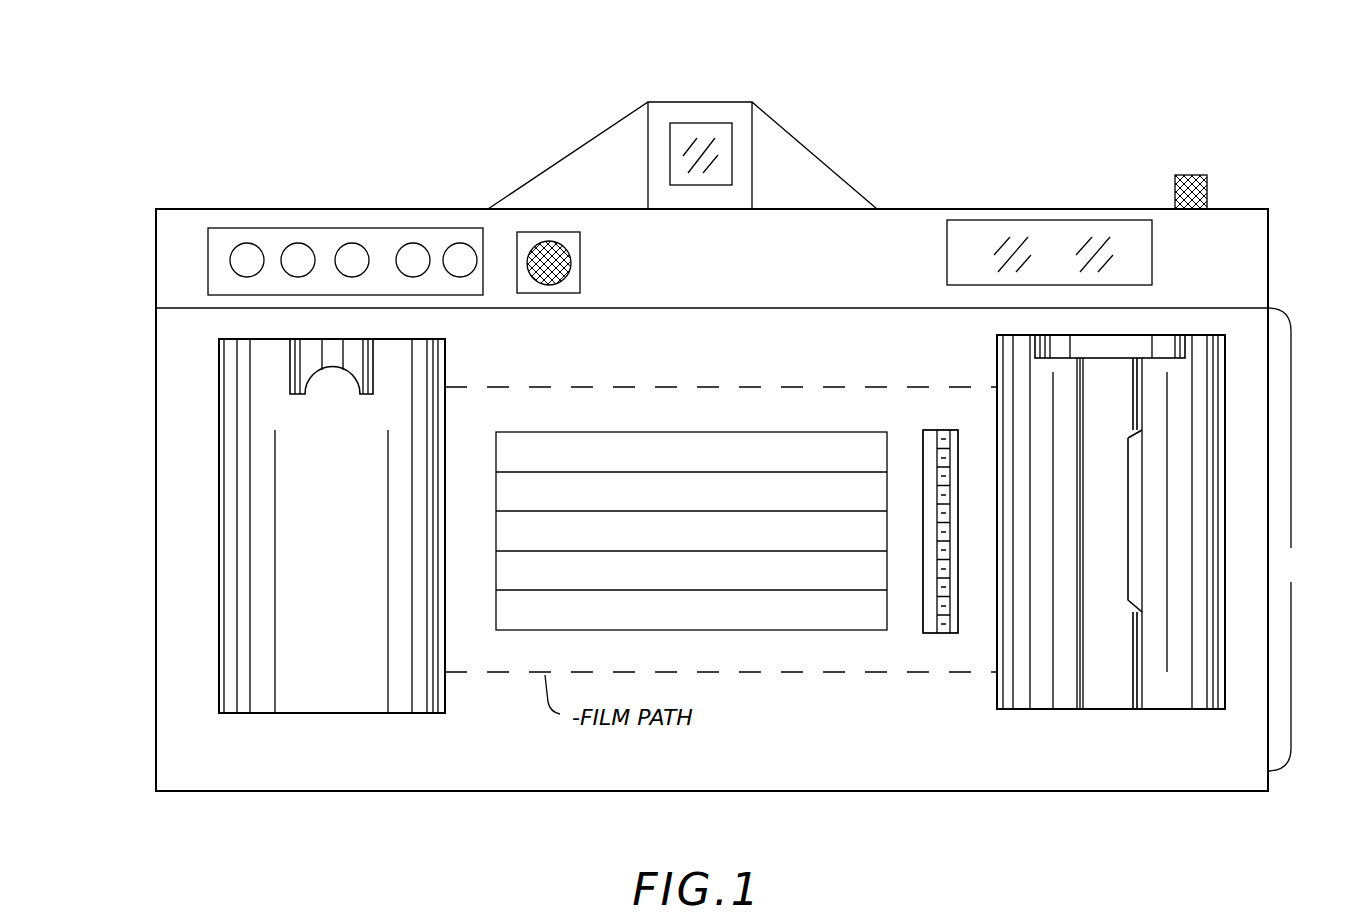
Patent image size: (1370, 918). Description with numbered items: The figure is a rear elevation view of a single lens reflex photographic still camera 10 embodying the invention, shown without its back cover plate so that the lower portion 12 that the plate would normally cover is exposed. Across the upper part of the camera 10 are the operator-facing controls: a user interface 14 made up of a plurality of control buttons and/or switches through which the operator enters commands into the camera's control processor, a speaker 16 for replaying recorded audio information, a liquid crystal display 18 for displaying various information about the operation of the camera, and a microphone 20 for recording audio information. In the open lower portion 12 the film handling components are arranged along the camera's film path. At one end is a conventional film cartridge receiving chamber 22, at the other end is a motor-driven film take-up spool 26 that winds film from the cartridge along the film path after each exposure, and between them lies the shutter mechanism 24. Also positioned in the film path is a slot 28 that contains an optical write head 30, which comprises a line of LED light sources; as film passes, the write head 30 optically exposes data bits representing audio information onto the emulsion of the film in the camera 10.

The camera 10 is at (817, 146).
The lower portion 12 is at (1291, 548).
The user interface 14 is at (208, 285).
The speaker 16 is at (580, 260).
The liquid crystal display 18 is at (947, 262).
The microphone 20 is at (1210, 207).
The film cartridge receiving chamber 22 is at (443, 648).
The shutter mechanism 24 is at (654, 430).
The film take-up spool 26 is at (1142, 690).
The slot 28 is at (930, 635).
The optical write head 30 is at (923, 447).